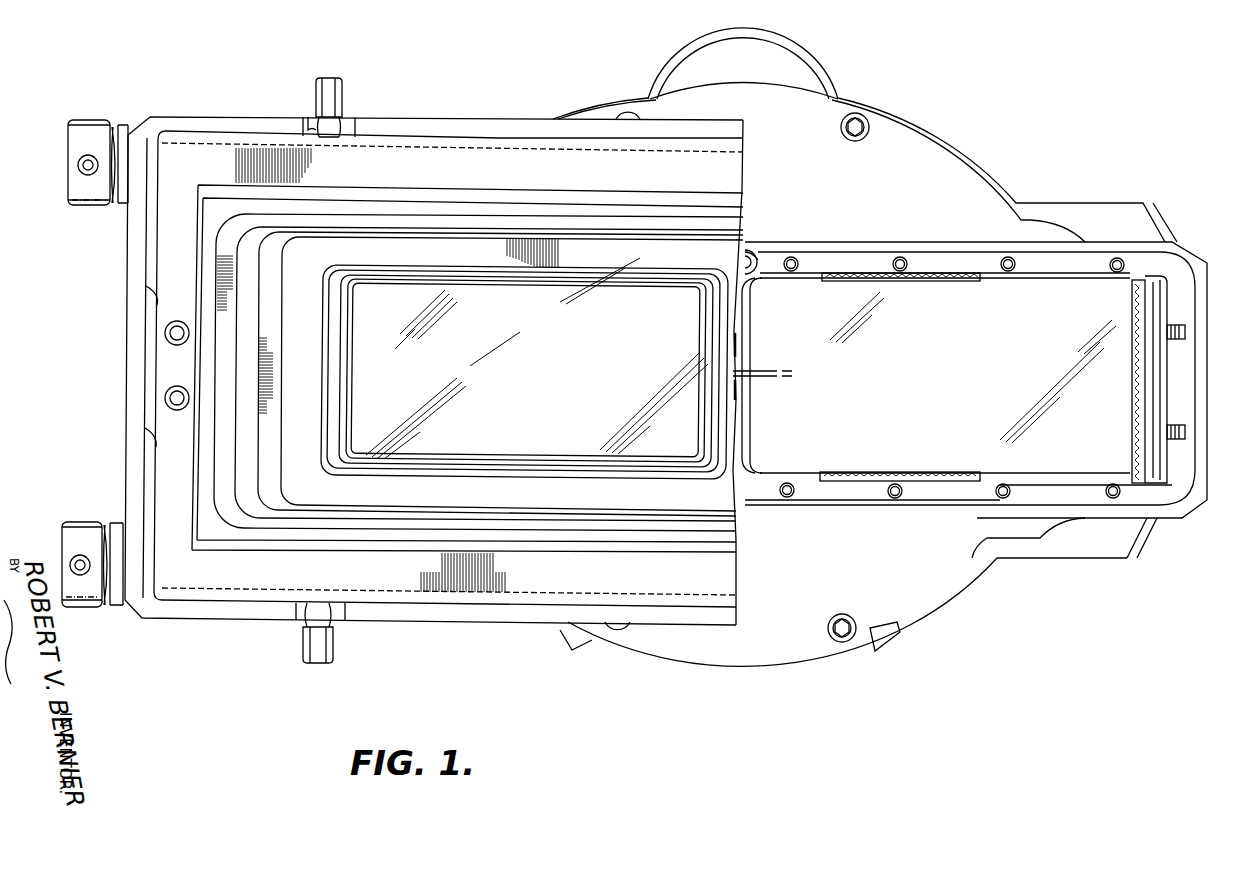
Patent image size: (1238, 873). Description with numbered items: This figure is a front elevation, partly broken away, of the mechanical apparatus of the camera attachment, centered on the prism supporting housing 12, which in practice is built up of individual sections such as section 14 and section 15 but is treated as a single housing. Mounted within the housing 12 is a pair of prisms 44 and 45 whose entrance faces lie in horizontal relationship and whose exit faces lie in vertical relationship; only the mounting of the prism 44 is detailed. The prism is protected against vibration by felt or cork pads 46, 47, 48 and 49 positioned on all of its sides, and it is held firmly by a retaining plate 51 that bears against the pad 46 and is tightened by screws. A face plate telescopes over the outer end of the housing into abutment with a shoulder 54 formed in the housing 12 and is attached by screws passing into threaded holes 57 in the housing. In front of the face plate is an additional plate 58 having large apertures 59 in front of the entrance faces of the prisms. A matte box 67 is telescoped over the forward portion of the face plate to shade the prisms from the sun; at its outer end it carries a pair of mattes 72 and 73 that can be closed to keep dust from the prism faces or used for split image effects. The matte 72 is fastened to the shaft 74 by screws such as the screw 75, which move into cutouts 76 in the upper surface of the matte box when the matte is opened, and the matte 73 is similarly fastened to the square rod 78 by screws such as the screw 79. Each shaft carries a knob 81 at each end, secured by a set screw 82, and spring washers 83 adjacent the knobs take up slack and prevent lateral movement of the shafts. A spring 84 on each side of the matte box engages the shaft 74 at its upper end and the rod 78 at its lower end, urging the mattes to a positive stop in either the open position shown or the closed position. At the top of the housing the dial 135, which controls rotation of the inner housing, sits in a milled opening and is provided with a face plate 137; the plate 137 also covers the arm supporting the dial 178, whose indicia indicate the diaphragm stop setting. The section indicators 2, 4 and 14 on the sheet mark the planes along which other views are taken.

The prism supporting housing 12 is at (1184, 269).
The housing section 15 is at (1173, 488).
The prism 44 is at (1043, 300).
The prism 45 is at (703, 279).
The felt or cork pad 46 is at (1132, 415).
The felt or cork pad 47 is at (838, 273).
The felt or cork pad 48 is at (751, 348).
The felt or cork pad 49 is at (913, 474).
The retaining plate 51 is at (1150, 317).
The shoulder 54 is at (1180, 250).
The threaded holes 57 is at (1126, 257).
The additional plate 58 is at (335, 360).
The apertures 59 is at (340, 410).
The matte box 67 is at (122, 384).
The matte 72 is at (383, 146).
The matte 73 is at (263, 592).
The shaft 74 is at (397, 207).
The screw 75 is at (345, 104).
The cutouts 76 is at (312, 116).
The square rod 78 is at (463, 582).
The screw 79 is at (324, 646).
The knob 81 is at (92, 125).
The set screw 82 is at (80, 166).
The spring washers 83 is at (113, 207).
The spring 84 is at (168, 255).
The dial 135 is at (800, 66).
The face plate 137 is at (910, 145).
The dial 178 is at (902, 637).
The section line 2- 2 is at (45, 55).
The section line 4- 4 is at (532, 60).
The housing section 14 is at (877, 537).